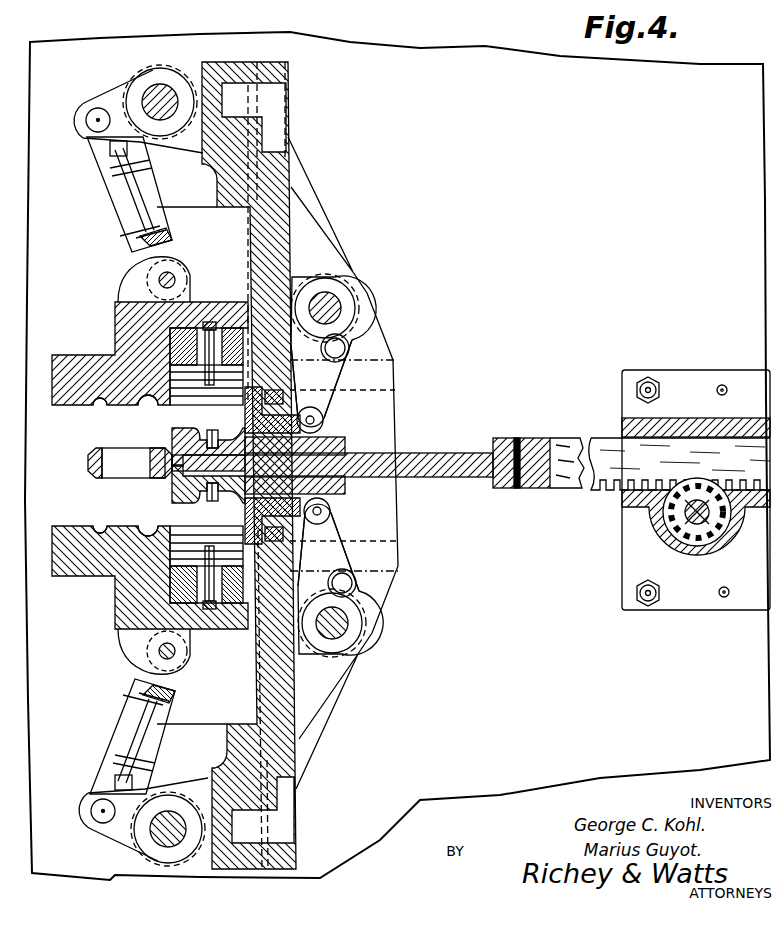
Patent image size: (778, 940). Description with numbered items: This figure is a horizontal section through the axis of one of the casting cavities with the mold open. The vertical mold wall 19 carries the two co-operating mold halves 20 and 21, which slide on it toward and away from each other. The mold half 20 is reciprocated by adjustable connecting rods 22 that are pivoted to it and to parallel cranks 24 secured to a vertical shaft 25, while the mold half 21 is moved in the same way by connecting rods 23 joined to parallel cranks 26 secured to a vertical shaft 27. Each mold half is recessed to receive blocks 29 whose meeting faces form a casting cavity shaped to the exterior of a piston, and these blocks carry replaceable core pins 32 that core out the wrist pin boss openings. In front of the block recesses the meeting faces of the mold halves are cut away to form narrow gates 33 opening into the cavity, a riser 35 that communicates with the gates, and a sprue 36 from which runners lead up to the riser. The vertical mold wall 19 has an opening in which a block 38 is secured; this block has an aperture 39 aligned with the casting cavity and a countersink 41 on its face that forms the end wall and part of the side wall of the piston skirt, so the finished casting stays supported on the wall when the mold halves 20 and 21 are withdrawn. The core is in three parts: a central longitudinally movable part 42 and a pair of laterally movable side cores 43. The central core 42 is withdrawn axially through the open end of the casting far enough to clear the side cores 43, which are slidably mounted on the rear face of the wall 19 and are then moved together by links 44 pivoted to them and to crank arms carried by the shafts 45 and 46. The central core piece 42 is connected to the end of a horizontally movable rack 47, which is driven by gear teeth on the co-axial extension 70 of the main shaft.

The vertical mold wall 19 is at (278, 222).
The mold half 20 is at (115, 316).
The mold half 21 is at (128, 590).
The adjustable connecting rod 22 is at (128, 206).
The adjustable connecting rod 23 is at (130, 712).
The crank 24 is at (108, 95).
The vertical shaft 25 is at (150, 95).
The crank 26 is at (118, 836).
The vertical shaft 27 is at (167, 830).
The block 29 is at (170, 345).
The core pin 32 is at (212, 343).
The gate 33 is at (170, 405).
The riser 35 is at (150, 405).
The sprue 36 is at (96, 404).
The block 38 is at (316, 413).
The aperture 39 is at (325, 432).
The countersink 41 is at (245, 416).
The central core part 42 is at (450, 470).
The side core 43 is at (313, 455).
The connecting rod 44 is at (346, 360).
The shaft 45 is at (353, 276).
The shaft 46 is at (350, 622).
The rack 47 is at (603, 488).
The co-axial extension 70 is at (690, 535).